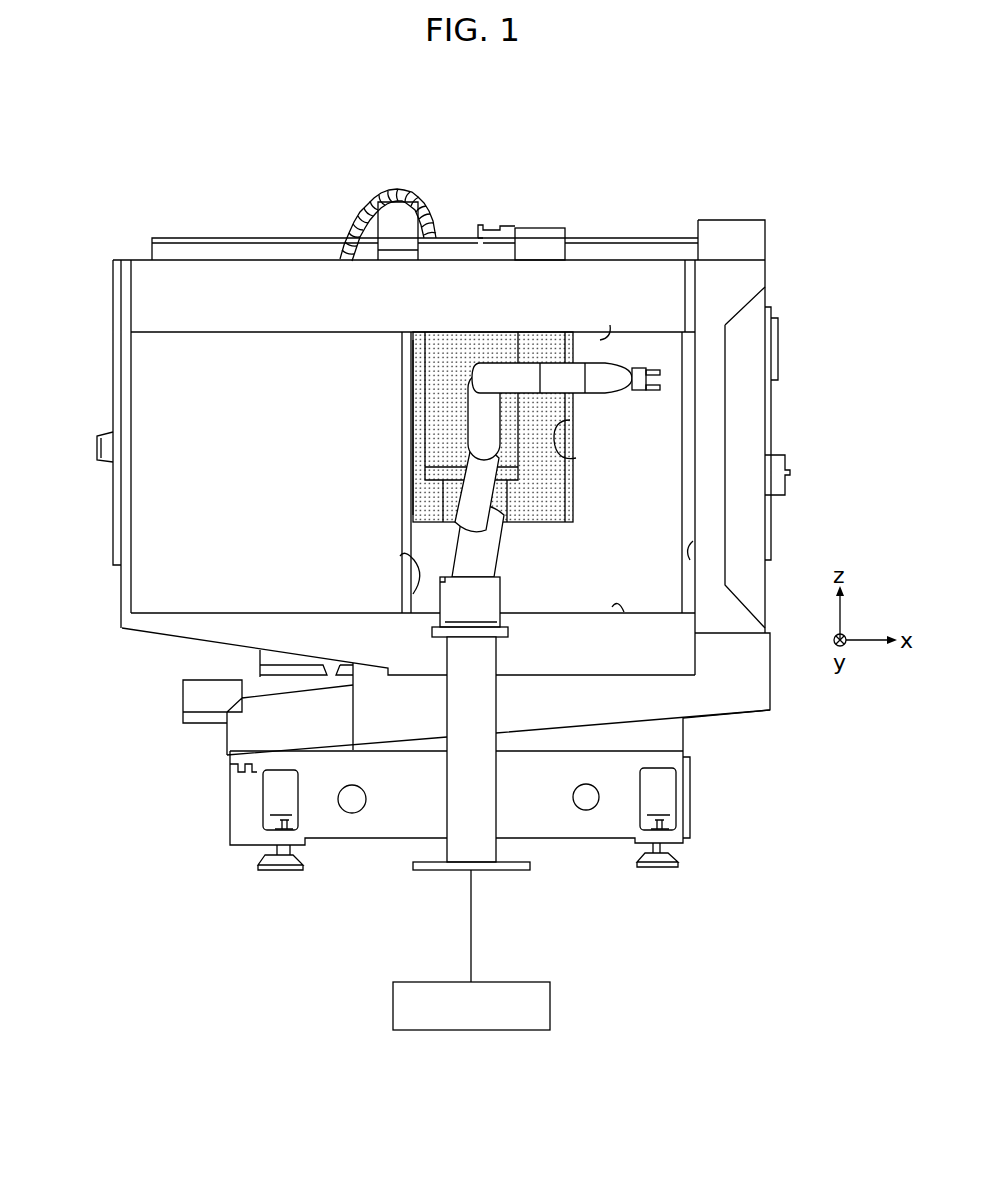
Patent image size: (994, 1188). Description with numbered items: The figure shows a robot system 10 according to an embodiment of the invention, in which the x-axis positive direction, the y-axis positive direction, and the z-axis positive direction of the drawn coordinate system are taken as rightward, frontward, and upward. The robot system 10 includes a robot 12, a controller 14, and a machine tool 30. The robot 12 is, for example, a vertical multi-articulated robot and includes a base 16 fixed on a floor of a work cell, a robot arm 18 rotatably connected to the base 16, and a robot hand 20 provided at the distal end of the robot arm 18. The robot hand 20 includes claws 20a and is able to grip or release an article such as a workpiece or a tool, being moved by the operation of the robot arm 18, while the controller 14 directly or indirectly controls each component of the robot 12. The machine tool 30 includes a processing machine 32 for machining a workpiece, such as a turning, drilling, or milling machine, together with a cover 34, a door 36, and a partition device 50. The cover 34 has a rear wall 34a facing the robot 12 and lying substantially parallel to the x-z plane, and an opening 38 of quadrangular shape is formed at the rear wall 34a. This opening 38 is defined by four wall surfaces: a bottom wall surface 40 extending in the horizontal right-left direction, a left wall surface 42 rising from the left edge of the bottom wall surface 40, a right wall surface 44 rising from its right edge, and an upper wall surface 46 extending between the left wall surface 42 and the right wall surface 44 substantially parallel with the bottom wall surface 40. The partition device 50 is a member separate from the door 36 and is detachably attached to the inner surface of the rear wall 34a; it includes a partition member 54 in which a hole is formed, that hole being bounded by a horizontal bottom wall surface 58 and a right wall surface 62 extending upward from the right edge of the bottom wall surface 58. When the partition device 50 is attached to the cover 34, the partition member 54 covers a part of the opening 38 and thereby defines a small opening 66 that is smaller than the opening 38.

The robot system 10 is at (815, 135).
The robot 12 is at (521, 575).
The controller 14 is at (550, 1005).
The base 16 is at (480, 810).
The robot arm 18 is at (472, 430).
The robot hand 20 is at (647, 394).
The claws 20a is at (662, 388).
The machine tool 30 is at (149, 199).
The processing machine 32 is at (543, 248).
The cover 34 is at (102, 348).
The rear wall 34a is at (567, 663).
The door 36 is at (173, 522).
The opening 38 is at (627, 341).
The bottom wall surface 40 is at (624, 612).
The left wall surface 42 is at (413, 594).
The right wall surface 44 is at (693, 541).
The upper wall surface 46 is at (600, 340).
The partition device 50 is at (674, 614).
The partition member 54 is at (665, 485).
The bottom wall surface 58 is at (415, 518).
The right wall surface 62 is at (576, 458).
The small opening 66 is at (459, 369).